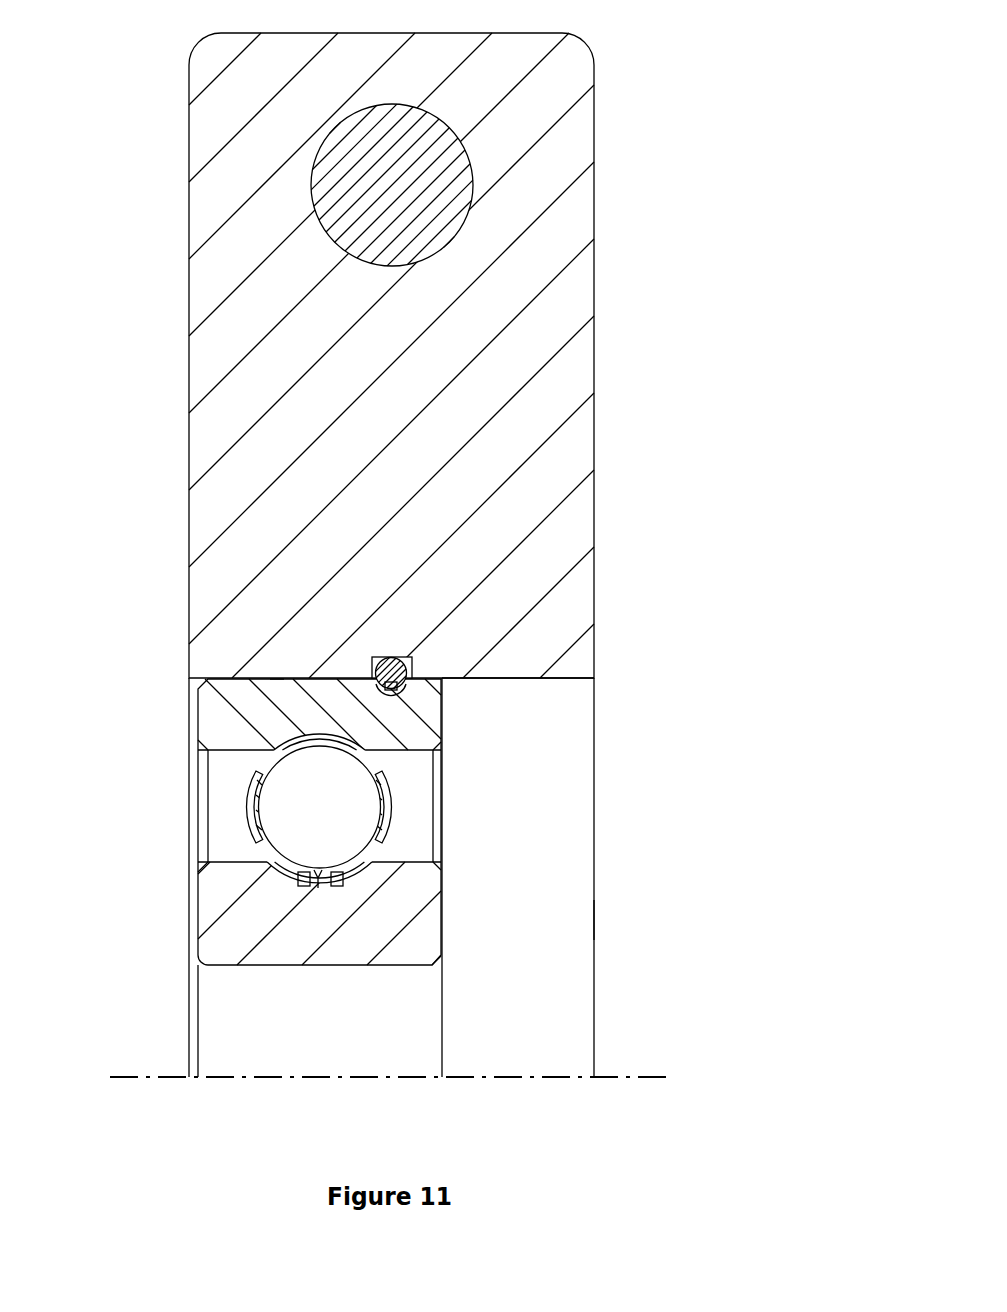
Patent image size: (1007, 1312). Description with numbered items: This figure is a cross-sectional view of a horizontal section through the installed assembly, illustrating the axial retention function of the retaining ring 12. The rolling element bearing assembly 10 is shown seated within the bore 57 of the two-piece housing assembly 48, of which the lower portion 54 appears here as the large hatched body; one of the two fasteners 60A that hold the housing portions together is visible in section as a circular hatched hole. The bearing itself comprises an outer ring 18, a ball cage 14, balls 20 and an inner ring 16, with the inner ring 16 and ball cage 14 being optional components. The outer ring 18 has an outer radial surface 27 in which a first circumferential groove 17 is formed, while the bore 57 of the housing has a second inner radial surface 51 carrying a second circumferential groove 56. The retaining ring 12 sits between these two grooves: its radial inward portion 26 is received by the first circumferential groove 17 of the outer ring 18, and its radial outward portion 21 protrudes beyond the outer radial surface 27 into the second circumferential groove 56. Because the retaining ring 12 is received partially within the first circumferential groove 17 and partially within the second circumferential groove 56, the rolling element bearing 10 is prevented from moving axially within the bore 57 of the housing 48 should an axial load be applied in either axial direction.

The rolling element bearing assembly 10 is at (450, 932).
The retaining ring 12 is at (389, 812).
The ball cage 14 is at (250, 828).
The inner ring 16 is at (215, 909).
The first circumferential groove 17 is at (385, 688).
The outer ring 18 is at (217, 709).
The balls 20 is at (365, 810).
The radial outward portion 21 is at (392, 657).
The radial inward portion 26 is at (406, 685).
The outer radial surface 27 is at (277, 691).
The two-piece housing assembly 48 is at (453, 555).
The second inner radial surface 51 is at (550, 680).
The lower portion 54 is at (540, 398).
The second circumferential groove 56 is at (372, 657).
The bore 57 is at (565, 919).
The fastener 60A is at (457, 188).